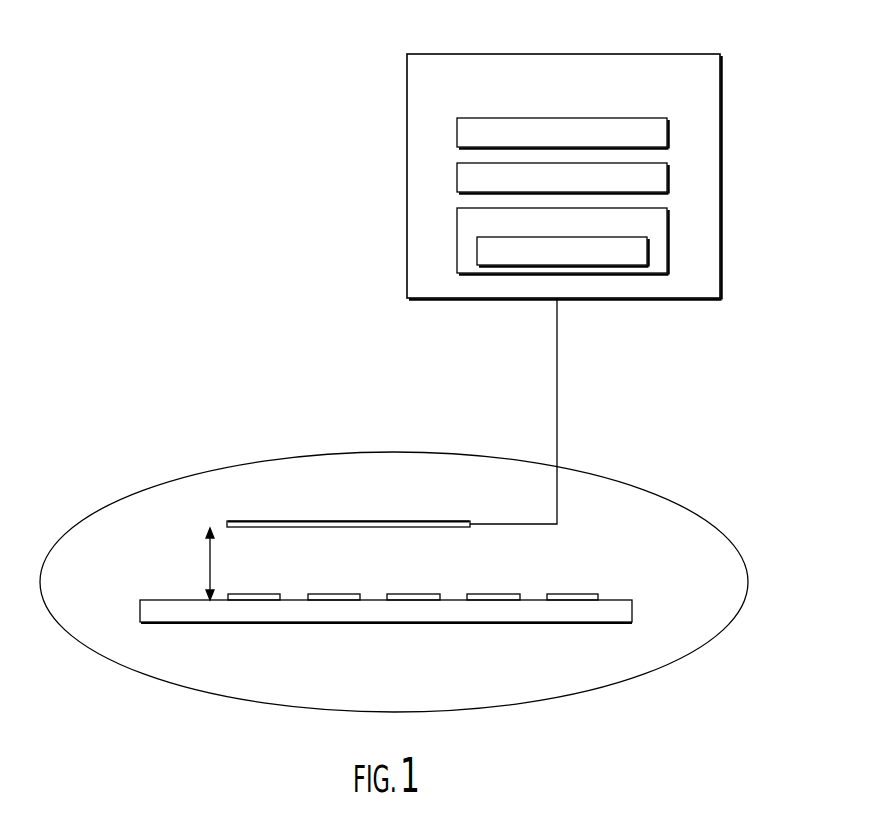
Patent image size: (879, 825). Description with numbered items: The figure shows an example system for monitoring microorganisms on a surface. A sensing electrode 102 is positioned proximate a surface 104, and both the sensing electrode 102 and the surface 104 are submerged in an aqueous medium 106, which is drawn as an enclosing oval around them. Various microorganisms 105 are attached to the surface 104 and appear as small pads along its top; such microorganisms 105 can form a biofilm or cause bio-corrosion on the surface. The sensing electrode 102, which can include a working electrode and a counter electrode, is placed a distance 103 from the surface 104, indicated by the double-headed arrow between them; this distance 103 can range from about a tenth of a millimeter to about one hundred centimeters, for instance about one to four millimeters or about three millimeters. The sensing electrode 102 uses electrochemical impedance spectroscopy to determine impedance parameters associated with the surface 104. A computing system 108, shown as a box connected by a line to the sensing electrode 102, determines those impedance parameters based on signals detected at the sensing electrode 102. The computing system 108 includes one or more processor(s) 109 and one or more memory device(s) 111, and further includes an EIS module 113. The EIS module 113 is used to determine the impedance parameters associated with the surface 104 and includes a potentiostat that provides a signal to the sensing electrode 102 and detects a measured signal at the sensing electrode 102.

The sensing electrode 102 is at (260, 518).
The distance 103 is at (206, 565).
The surface 104 is at (622, 615).
The microorganisms 105 is at (590, 590).
The aqueous medium 106 is at (80, 641).
The computing system 108 is at (441, 53).
The processor(s) 109 is at (669, 133).
The memory device(s) 111 is at (669, 180).
The EIS module 113 is at (669, 240).